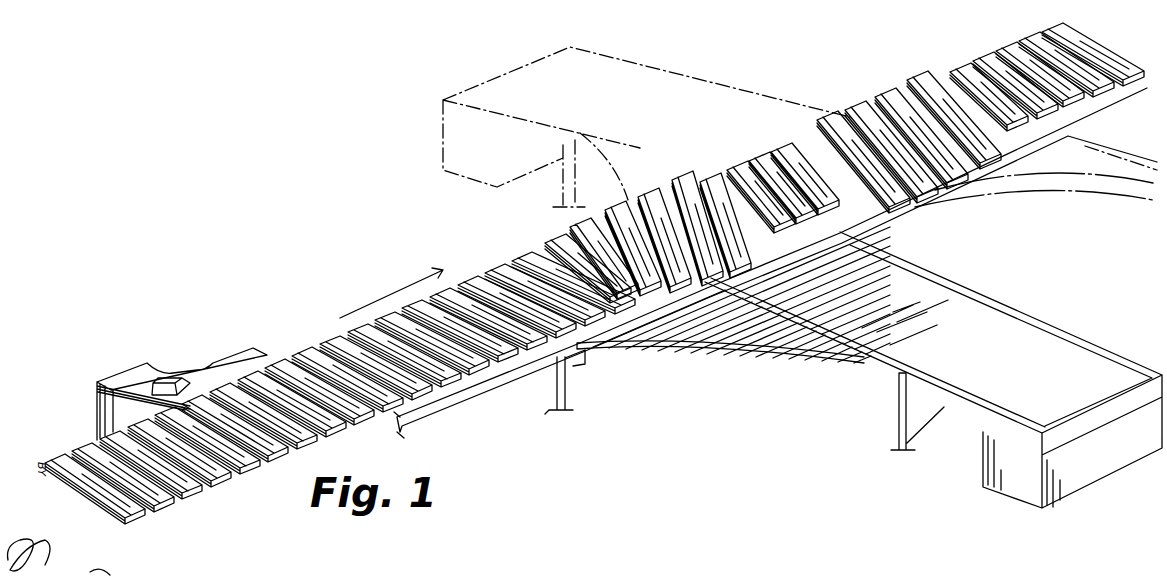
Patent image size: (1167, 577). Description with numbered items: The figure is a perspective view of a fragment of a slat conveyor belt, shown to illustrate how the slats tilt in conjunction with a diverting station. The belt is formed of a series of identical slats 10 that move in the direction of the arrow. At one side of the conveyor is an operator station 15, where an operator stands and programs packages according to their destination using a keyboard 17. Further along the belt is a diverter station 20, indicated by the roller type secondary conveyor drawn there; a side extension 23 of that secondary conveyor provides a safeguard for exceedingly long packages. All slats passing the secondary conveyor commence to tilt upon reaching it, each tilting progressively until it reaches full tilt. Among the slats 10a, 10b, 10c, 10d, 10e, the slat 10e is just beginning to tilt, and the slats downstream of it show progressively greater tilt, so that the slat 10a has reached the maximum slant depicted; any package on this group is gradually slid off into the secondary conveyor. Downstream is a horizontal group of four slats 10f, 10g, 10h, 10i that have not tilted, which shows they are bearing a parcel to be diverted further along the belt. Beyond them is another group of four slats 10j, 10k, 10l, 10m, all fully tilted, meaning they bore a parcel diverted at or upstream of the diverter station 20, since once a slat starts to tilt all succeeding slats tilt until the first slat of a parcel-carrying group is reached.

The slats 10 is at (80, 442).
The slat 10a is at (684, 171).
The slat 10b is at (648, 196).
The slat 10c is at (620, 206).
The slat 10d is at (575, 224).
The slat 10e is at (543, 243).
The slat 10f is at (787, 148).
The slat 10g is at (760, 157).
The slat 10h is at (740, 165).
The slat 10i is at (712, 178).
The slat 10j is at (925, 78).
The slat 10k is at (893, 95).
The slat 10l is at (858, 108).
The slat 10m is at (833, 110).
The operator station 15 is at (212, 356).
The keyboard 17 is at (192, 381).
The diverter station 20 is at (1025, 303).
The side extension 23 is at (796, 367).